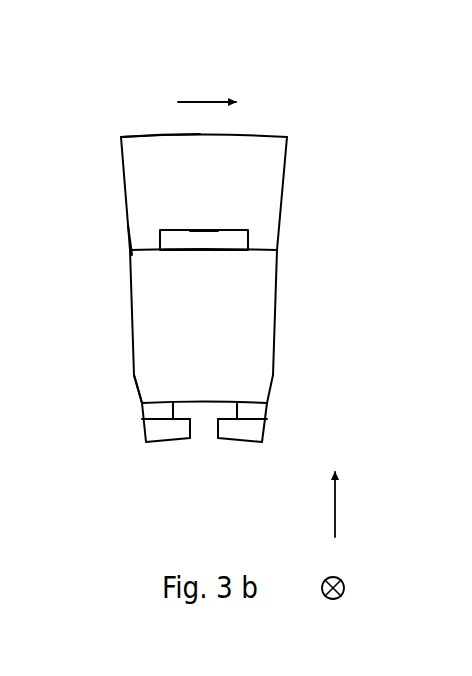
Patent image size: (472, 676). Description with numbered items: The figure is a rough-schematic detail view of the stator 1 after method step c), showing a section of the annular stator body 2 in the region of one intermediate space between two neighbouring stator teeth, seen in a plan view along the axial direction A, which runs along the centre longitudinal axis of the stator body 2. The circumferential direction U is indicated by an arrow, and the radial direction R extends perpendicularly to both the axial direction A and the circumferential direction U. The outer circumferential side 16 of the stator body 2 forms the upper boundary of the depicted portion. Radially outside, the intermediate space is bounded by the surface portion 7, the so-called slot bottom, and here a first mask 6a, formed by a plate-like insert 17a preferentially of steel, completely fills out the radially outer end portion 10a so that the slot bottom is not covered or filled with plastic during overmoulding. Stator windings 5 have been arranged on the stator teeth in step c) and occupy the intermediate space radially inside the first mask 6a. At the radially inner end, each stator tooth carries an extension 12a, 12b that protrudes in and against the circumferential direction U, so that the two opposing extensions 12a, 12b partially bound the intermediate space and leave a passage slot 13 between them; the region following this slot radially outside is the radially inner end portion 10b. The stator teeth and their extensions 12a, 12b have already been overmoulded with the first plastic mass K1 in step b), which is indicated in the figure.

The stator 1 is at (221, 276).
The stator body 2 is at (267, 136).
The stator windings 5 is at (237, 331).
The first mask 6a is at (274, 238).
The insert 17a is at (240, 244).
The surface portion 7 is at (201, 232).
The radially outer end portion 10a is at (140, 239).
The radially inner end portion 10b is at (167, 396).
The extension 12a is at (183, 441).
The extension 12b is at (222, 441).
The passage slot 13 is at (203, 431).
The outer circumferential side 16 is at (132, 135).
The first plastic mass K1 is at (152, 412).
The circumferential direction U is at (205, 100).
The radial direction R is at (337, 507).
The axial direction A is at (346, 586).